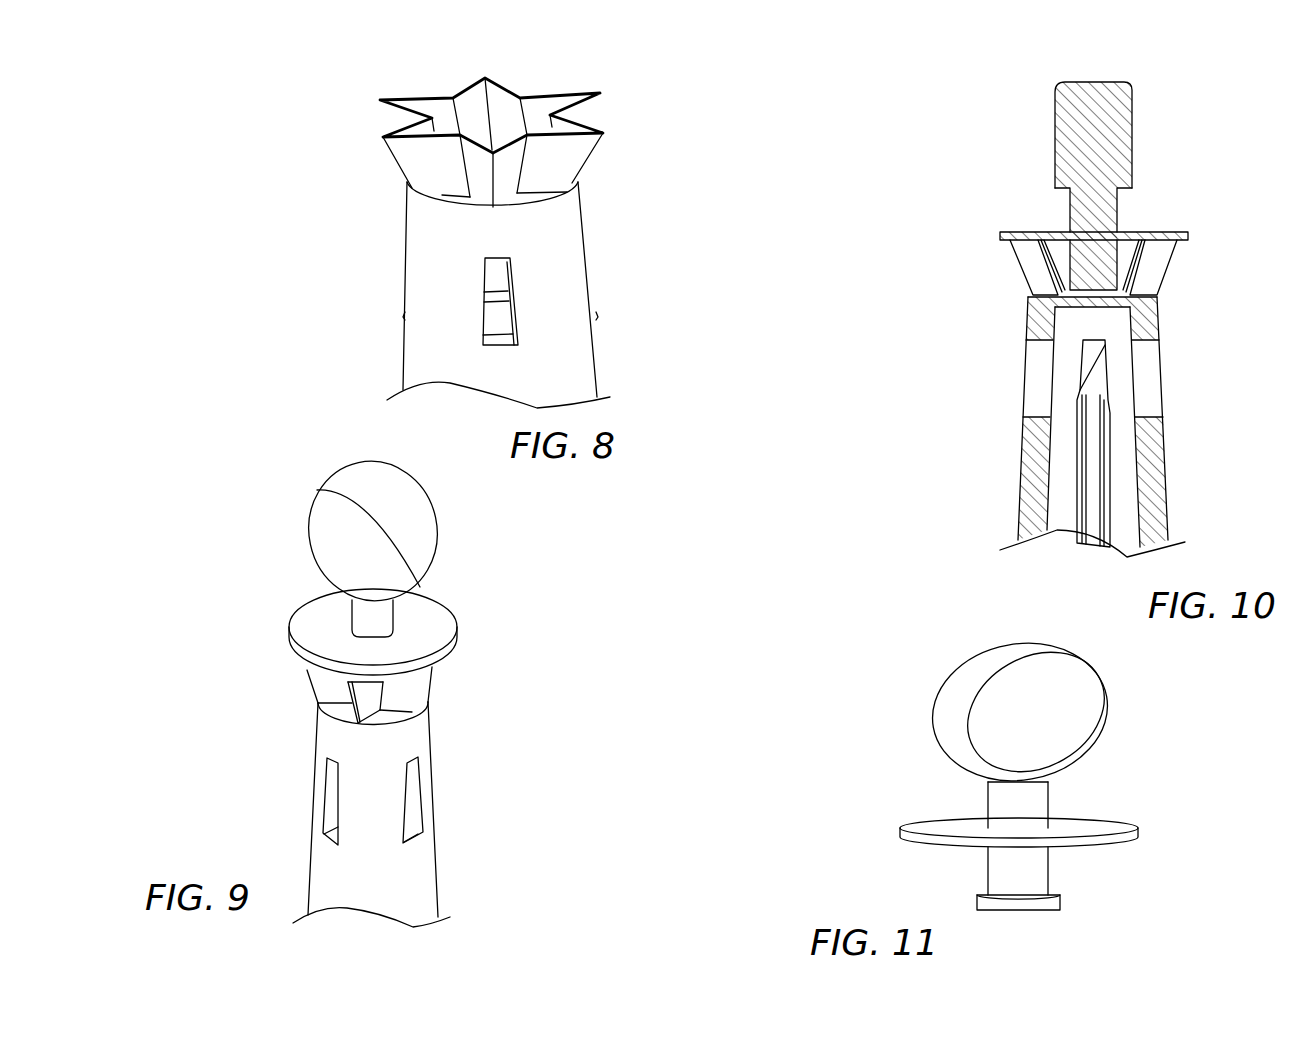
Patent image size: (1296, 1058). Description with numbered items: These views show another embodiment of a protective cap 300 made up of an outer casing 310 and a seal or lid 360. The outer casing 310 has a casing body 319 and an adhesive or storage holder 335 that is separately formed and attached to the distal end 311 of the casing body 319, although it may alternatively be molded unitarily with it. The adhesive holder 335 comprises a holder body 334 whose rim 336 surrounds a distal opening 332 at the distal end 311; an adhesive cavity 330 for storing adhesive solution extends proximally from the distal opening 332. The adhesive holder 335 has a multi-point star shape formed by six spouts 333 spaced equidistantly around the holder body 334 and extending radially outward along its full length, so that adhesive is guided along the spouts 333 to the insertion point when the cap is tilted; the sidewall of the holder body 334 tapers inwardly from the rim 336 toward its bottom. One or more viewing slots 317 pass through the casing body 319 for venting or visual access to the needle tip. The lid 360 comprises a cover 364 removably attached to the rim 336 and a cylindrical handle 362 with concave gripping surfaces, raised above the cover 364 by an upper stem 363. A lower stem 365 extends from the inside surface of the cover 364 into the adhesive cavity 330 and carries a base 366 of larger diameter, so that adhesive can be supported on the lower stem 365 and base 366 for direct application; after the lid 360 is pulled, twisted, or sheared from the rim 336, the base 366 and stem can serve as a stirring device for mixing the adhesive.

In FIG. 9, the protective cap 300 is at (364, 688).
In FIG. 8, the outer casing 310 is at (620, 313).
In FIG. 9, the outer casing 310 is at (445, 870).
In FIG. 10, the outer casing 310 is at (1167, 473).
In FIG. 8, the distal end 311 is at (447, 200).
In FIG. 8, the viewing slot 317 is at (513, 270).
In FIG. 10, the casing body 319 is at (1023, 453).
In FIG. 8, the adhesive cavity 330 is at (538, 105).
In FIG. 8, the distal opening 332 is at (475, 122).
In FIG. 8, the spout 333 is at (600, 96).
In FIG. 9, the spout 333 is at (307, 680).
In FIG. 8, the holder body 334 is at (395, 158).
In FIG. 8, the adhesive holder 335 is at (595, 157).
In FIG. 9, the adhesive holder 335 is at (430, 680).
In FIG. 10, the adhesive holder 335 is at (1163, 268).
In FIG. 8, the rim 336 is at (402, 97).
In FIG. 9, the lid 360 is at (447, 531).
In FIG. 10, the lid 360 is at (1089, 187).
In FIG. 11, the lid 360 is at (1047, 771).
In FIG. 10, the handle 362 is at (1055, 107).
In FIG. 11, the handle 362 is at (1107, 687).
In FIG. 10, the upper stem 363 is at (1070, 213).
In FIG. 11, the upper stem 363 is at (988, 803).
In FIG. 10, the cover 364 is at (1000, 235).
In FIG. 11, the cover 364 is at (1138, 832).
In FIG. 10, the lower stem 365 is at (1068, 260).
In FIG. 11, the lower stem 365 is at (988, 877).
In FIG. 10, the base 366 is at (1060, 277).
In FIG. 11, the base 366 is at (1060, 900).